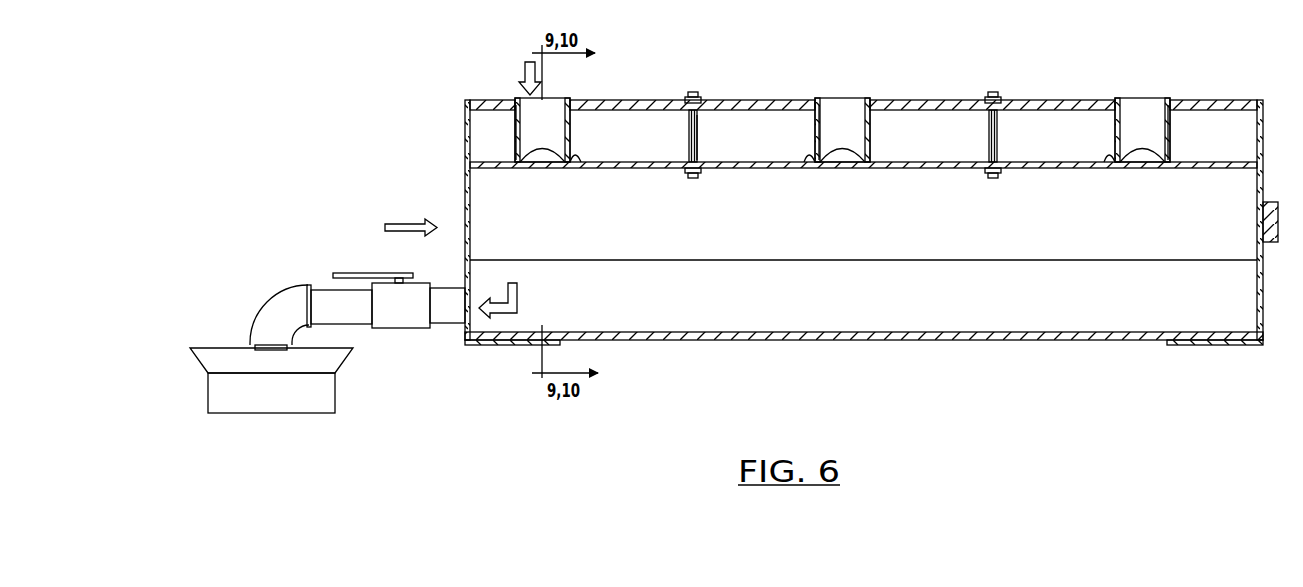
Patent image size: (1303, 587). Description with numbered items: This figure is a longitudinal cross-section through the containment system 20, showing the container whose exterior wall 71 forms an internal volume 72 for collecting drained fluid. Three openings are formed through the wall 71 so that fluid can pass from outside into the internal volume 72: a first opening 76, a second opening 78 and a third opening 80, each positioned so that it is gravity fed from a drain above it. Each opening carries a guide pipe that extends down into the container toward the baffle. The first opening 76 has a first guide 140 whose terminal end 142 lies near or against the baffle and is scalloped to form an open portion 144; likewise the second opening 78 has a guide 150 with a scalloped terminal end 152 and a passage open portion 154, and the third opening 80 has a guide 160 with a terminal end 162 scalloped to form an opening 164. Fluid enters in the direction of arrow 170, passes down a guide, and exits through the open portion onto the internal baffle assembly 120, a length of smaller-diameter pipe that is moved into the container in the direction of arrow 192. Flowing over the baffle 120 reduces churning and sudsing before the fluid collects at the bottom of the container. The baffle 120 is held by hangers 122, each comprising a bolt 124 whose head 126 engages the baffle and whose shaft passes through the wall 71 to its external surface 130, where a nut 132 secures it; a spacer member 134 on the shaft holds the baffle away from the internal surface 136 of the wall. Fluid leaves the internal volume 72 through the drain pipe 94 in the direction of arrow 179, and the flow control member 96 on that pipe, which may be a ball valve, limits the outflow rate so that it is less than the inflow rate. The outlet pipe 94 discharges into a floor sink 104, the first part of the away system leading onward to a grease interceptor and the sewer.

The containment system 20 is at (620, 417).
The exterior wall 71 is at (598, 100).
The internal volume 72 is at (969, 293).
The first opening 76 is at (553, 110).
The second opening 78 is at (841, 113).
The third opening 80 is at (1141, 113).
The drain pipe 94 is at (318, 288).
The flow control member 96 is at (362, 272).
The floor sink 104 is at (212, 348).
The internal baffle assembly 120 is at (488, 158).
The hanger 122 is at (693, 91).
The bolt 124 is at (693, 180).
The head 126 is at (685, 170).
The external surface 130 is at (748, 104).
The nut 132 is at (684, 100).
The spacer member 134 is at (700, 132).
The internal surface 136 is at (924, 102).
The first guide 140 is at (513, 131).
The terminal end 142 is at (579, 161).
The open portion 144 is at (547, 162).
The guide 150 is at (813, 127).
The terminal end 152 is at (807, 163).
The passage open portion 154 is at (848, 163).
The guide 160 is at (1174, 128).
The terminal end 162 is at (1107, 163).
The opening 164 is at (1150, 163).
The arrow 170 is at (524, 68).
The arrow 179 is at (500, 313).
The arrow 192 is at (393, 218).